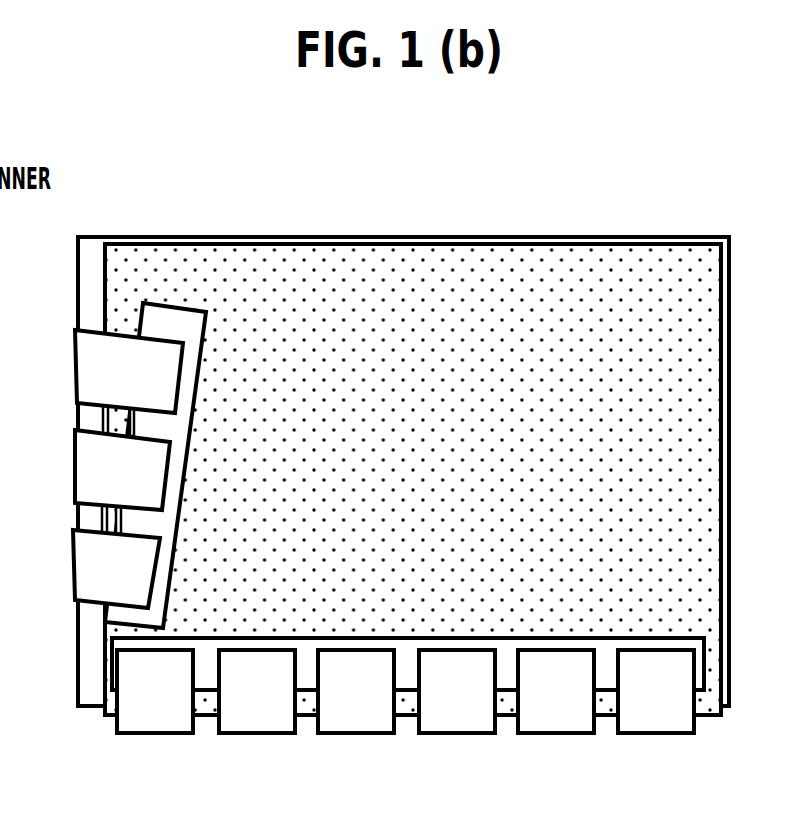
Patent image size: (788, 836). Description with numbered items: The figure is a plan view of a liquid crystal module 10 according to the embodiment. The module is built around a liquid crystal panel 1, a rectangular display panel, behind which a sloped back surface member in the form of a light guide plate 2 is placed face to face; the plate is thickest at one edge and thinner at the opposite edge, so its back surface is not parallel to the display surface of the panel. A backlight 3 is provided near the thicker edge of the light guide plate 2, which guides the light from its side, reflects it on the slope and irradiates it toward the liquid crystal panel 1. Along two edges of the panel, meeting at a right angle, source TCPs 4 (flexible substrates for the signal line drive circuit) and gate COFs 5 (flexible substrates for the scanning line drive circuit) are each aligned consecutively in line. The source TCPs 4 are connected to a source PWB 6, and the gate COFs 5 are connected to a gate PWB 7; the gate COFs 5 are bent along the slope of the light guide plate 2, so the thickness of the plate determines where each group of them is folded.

The liquid crystal panel 1 is at (92, 312).
The light guide plate 2 is at (700, 518).
The backlight 3 is at (207, 718).
The source TCPs 4 is at (660, 723).
The gate COFs 5 is at (85, 548).
The source PWB 6 is at (612, 652).
The gate PWB 7 is at (173, 313).
The liquid crystal module 10 is at (590, 229).